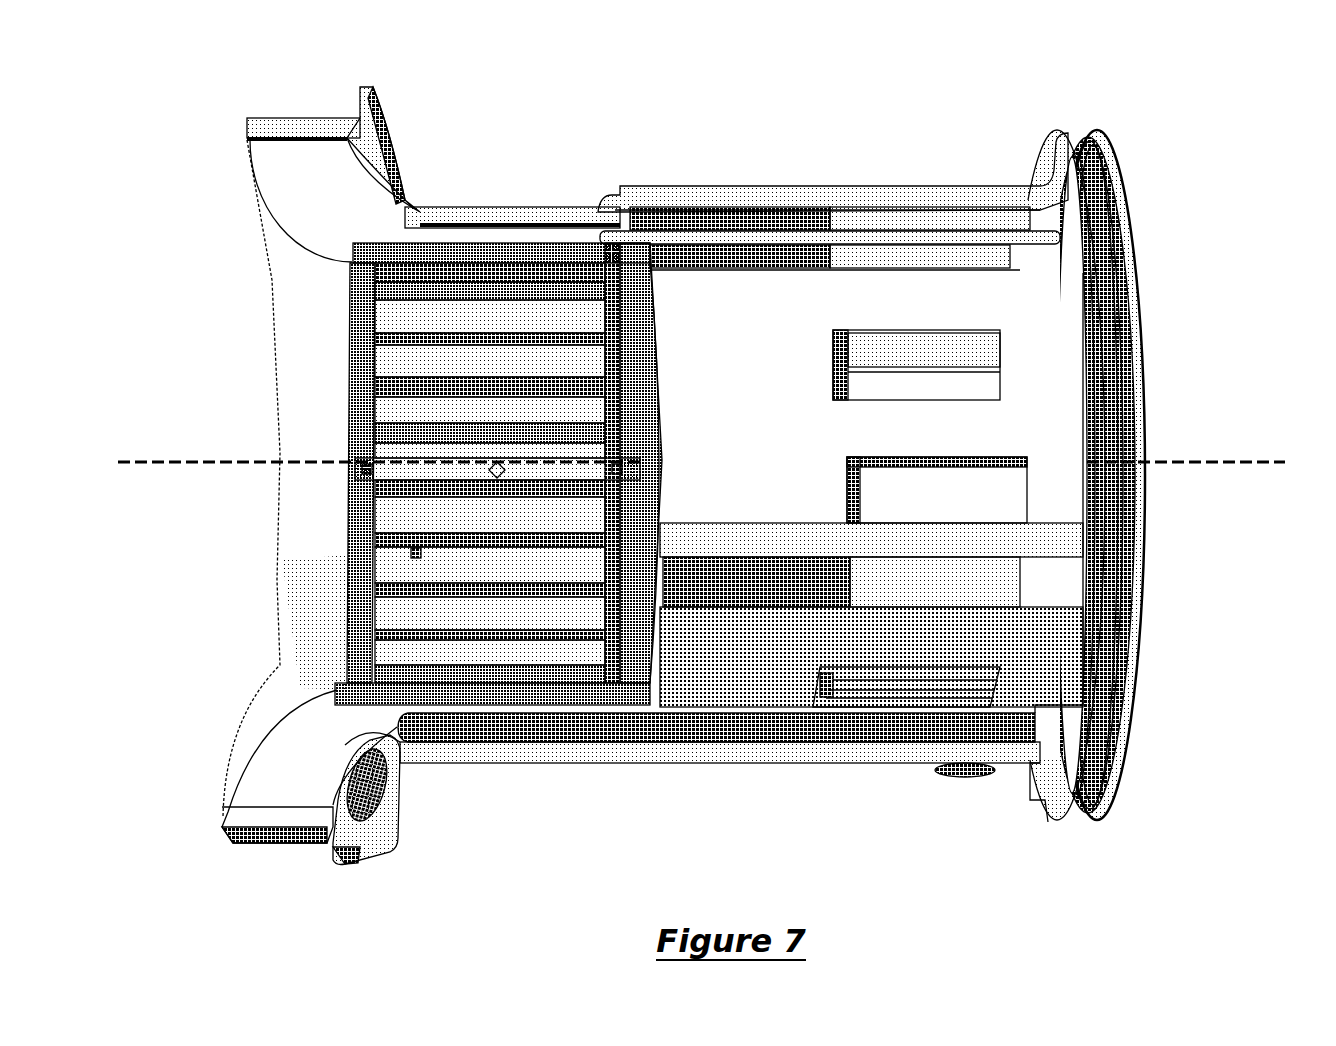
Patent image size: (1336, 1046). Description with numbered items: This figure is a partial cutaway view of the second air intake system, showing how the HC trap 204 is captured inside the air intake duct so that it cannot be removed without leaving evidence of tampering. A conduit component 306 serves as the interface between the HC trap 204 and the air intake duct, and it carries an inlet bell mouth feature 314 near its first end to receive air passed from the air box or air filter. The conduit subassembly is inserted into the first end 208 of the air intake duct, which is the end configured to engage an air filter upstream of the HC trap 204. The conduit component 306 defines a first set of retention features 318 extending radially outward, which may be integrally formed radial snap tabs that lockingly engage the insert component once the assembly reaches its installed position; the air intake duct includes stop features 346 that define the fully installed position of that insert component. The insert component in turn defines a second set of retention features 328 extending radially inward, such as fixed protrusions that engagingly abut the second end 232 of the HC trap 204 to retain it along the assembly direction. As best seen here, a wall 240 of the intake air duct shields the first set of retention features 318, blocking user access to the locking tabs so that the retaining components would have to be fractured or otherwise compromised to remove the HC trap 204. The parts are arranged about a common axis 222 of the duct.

The HC trap 204 is at (465, 600).
The first end 208 is at (290, 128).
The axis 222 is at (1235, 462).
The second end 232 is at (675, 330).
The wall 240 is at (857, 188).
The conduit component 306 is at (297, 340).
The inlet bell mouth feature 314 is at (250, 175).
The first set of retention features 318 is at (908, 360).
The second set of retention features 328 is at (690, 280).
The stop features 346 is at (592, 197).